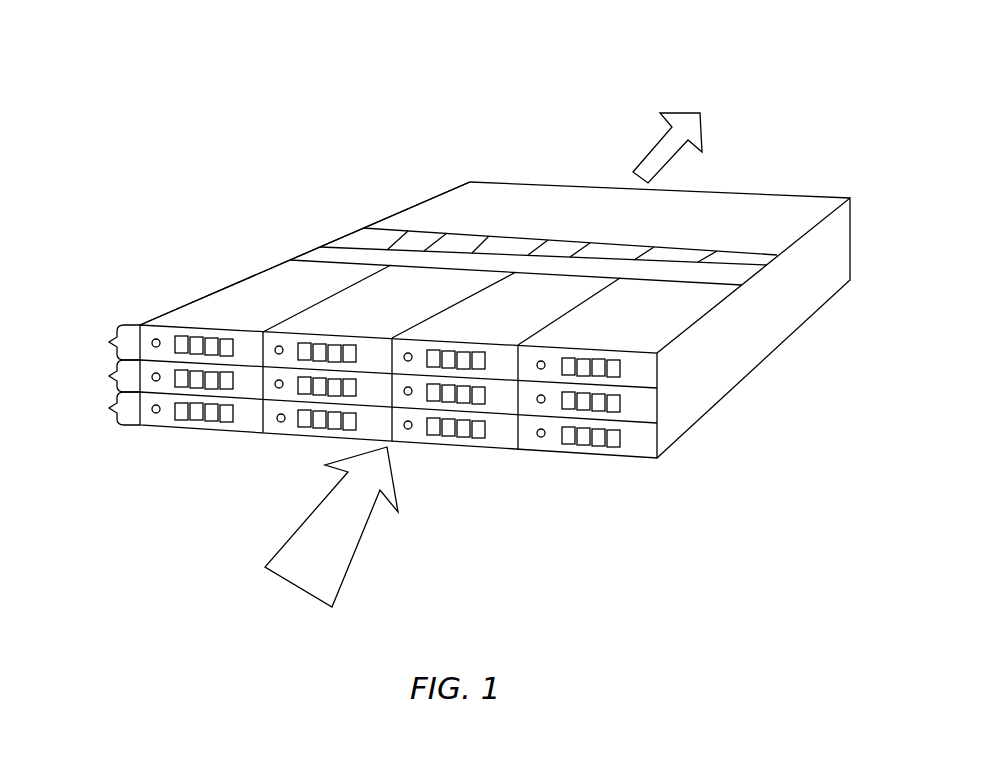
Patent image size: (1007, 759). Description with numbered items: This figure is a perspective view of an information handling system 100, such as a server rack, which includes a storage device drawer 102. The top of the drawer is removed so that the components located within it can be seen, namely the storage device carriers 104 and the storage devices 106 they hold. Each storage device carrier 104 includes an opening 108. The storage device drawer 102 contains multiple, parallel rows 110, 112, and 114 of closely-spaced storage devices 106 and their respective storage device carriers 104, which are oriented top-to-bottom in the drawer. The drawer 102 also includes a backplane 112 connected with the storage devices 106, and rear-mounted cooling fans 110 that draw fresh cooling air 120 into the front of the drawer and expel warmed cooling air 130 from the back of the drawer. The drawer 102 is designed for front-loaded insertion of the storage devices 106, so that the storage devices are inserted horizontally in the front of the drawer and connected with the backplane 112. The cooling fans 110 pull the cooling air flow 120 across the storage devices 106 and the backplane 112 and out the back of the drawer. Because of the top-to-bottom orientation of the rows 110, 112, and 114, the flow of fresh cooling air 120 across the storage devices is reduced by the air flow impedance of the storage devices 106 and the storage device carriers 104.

The information handling system 100 is at (604, 28).
The storage device drawer 102 is at (416, 200).
The storage device carrier 104 is at (245, 340).
The storage device 106 is at (190, 307).
The opening 108 is at (275, 430).
The row of storage devices 110 is at (367, 233).
The row of storage devices 112 is at (325, 252).
The row of storage devices 114 is at (95, 408).
The fresh cooling air 120 is at (331, 527).
The warmed cooling air 130 is at (660, 140).